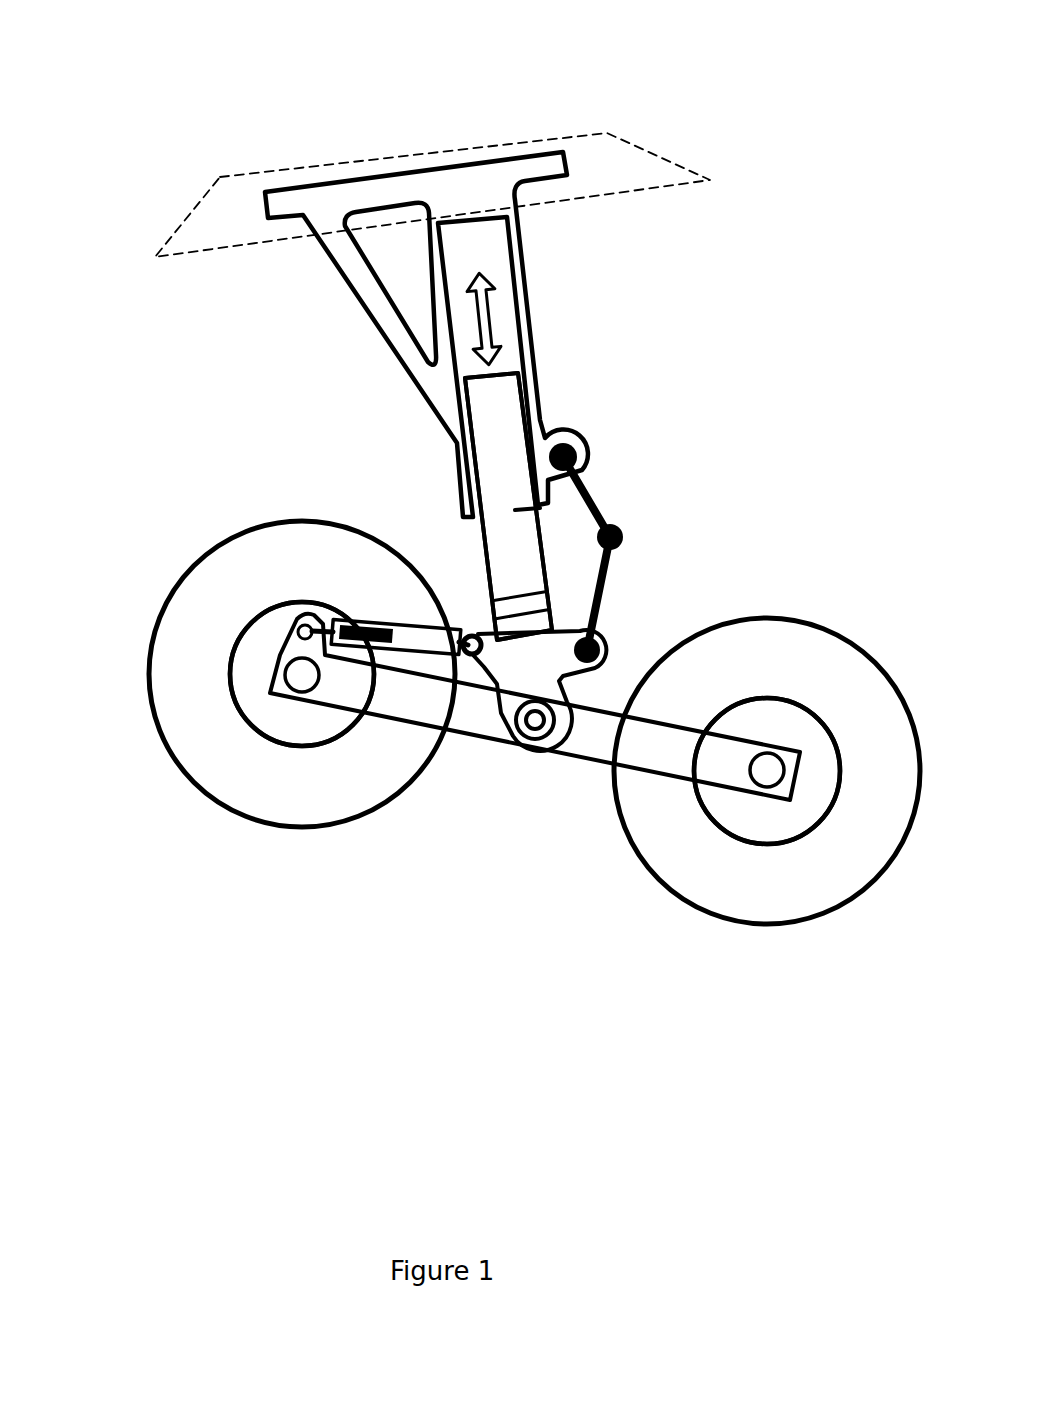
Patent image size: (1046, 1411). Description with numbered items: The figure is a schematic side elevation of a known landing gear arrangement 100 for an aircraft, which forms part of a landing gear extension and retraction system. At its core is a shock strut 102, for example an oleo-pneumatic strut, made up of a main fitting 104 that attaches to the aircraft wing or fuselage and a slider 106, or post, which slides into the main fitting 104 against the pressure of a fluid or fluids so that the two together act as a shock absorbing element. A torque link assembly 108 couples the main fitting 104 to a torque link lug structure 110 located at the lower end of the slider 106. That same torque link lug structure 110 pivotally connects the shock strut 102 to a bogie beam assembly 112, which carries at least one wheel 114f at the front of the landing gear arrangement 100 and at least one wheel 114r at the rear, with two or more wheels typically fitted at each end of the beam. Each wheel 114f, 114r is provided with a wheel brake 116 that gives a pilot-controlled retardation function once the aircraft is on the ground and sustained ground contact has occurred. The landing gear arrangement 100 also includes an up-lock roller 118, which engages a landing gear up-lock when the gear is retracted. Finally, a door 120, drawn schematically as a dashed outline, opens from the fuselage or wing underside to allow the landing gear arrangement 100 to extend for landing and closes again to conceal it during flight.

The landing gear arrangement 100 is at (460, 26).
The shock strut 102 is at (345, 399).
The main fitting 104 is at (530, 320).
The slider 106 is at (497, 535).
The torque link assembly 108 is at (603, 585).
The torque link lug structure 110 is at (556, 678).
The bogie beam assembly 112 is at (612, 747).
The front wheel 114f is at (270, 822).
The rear wheel 114r is at (737, 921).
The wheel brake 116 is at (240, 632).
The up-lock roller 118 is at (497, 603).
The door 120 is at (647, 153).